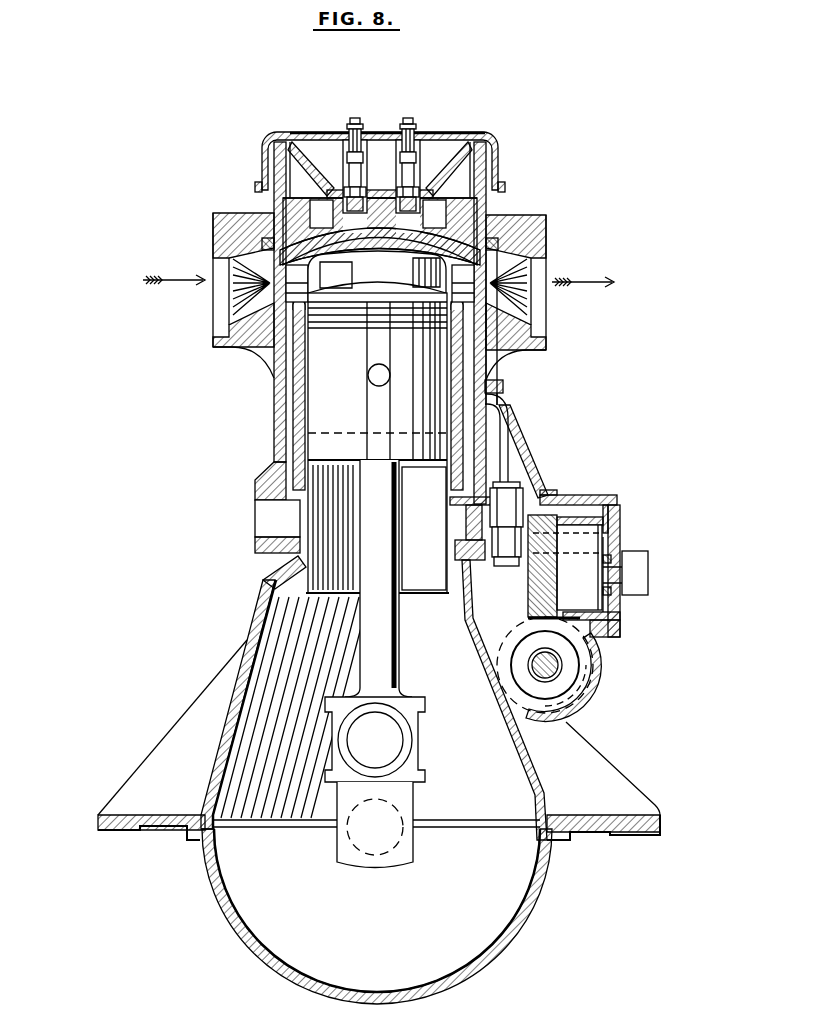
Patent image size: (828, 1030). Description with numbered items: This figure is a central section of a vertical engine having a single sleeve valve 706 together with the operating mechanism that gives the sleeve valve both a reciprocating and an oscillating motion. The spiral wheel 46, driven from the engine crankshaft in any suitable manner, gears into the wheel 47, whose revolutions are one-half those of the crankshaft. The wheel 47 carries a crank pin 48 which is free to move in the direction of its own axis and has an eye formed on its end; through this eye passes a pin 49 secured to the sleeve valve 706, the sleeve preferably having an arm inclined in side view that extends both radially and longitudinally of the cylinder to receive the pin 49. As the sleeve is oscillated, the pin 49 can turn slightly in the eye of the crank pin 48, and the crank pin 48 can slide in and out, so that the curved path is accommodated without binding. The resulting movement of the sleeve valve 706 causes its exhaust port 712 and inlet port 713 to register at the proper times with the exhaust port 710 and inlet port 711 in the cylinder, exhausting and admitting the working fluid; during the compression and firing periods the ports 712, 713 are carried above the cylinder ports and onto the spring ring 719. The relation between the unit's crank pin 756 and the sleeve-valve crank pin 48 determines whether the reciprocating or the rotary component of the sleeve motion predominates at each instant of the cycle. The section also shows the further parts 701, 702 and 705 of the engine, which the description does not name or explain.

The spiral wheel 46 is at (590, 677).
The wheel 47 is at (538, 600).
The crank pin 48 is at (582, 553).
The pin 49 is at (507, 564).
The piston 701 is at (377, 422).
The connecting rod 702 is at (323, 518).
The spark plugs 705 is at (404, 126).
The sleeve valve 706 is at (273, 373).
The exhaust port 710 is at (497, 287).
The inlet port 711 is at (293, 283).
The exhaust port 712 is at (484, 235).
The inlet port 713 is at (283, 243).
The spring ring 719 is at (281, 245).
The crank pin 756 is at (393, 744).